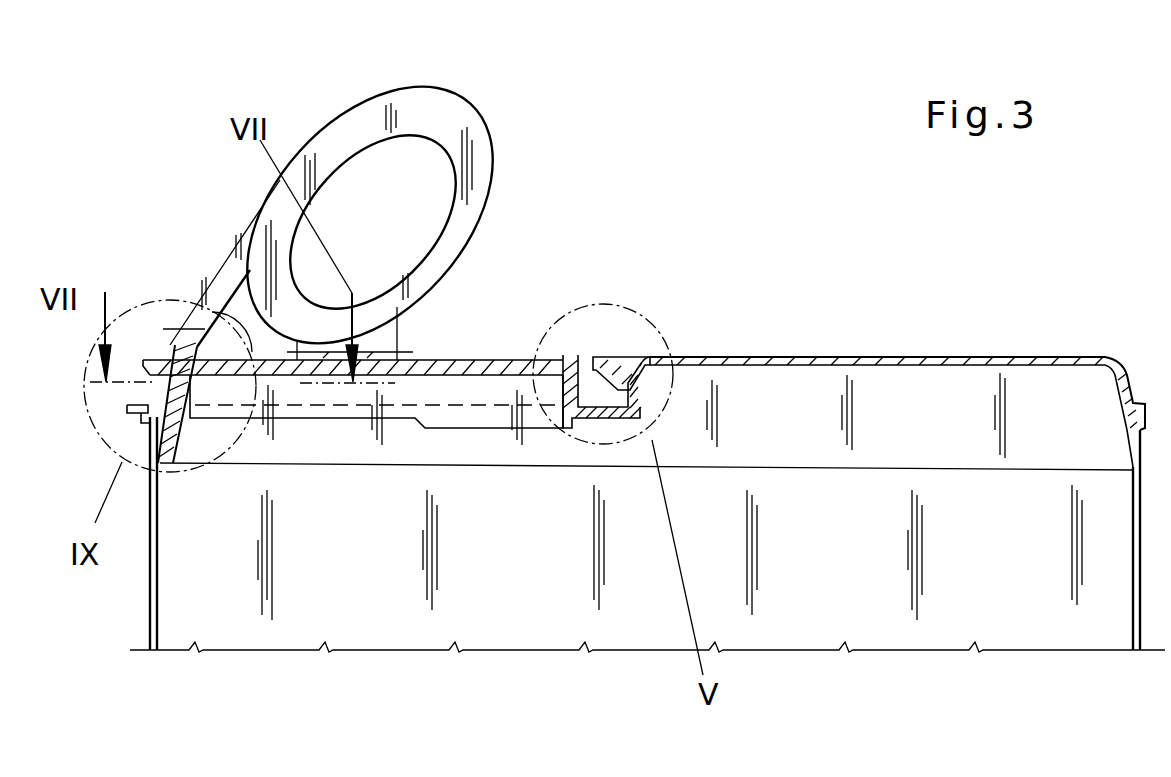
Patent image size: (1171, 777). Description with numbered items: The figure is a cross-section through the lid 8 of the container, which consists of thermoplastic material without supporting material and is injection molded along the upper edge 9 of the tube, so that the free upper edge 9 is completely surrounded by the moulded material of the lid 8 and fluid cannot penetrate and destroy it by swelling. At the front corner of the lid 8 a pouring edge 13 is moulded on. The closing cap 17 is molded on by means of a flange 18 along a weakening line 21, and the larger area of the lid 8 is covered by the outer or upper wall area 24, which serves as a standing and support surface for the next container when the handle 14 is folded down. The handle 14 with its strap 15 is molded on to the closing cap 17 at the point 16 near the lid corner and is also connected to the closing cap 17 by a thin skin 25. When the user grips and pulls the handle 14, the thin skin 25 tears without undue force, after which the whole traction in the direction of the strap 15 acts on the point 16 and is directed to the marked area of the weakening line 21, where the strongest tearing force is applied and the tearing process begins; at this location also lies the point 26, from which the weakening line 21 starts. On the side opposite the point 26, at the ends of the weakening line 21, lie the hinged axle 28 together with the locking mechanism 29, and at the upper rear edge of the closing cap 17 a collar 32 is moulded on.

The lid 8 is at (943, 357).
The upper edge 9 is at (1112, 447).
The pouring edge 13 is at (132, 408).
The handle 14 is at (338, 150).
The strap 15 is at (215, 282).
The point 16 is at (148, 363).
The closing cap 17 is at (445, 367).
The flange 18 is at (178, 392).
The weakening line 21 is at (175, 395).
The point 26 is at (240, 509).
The upper wall area 24 is at (900, 356).
The thin skin 25 is at (385, 337).
The hinged axle 28 is at (570, 430).
The locking mechanism 29 is at (638, 340).
The collar 32 is at (580, 358).